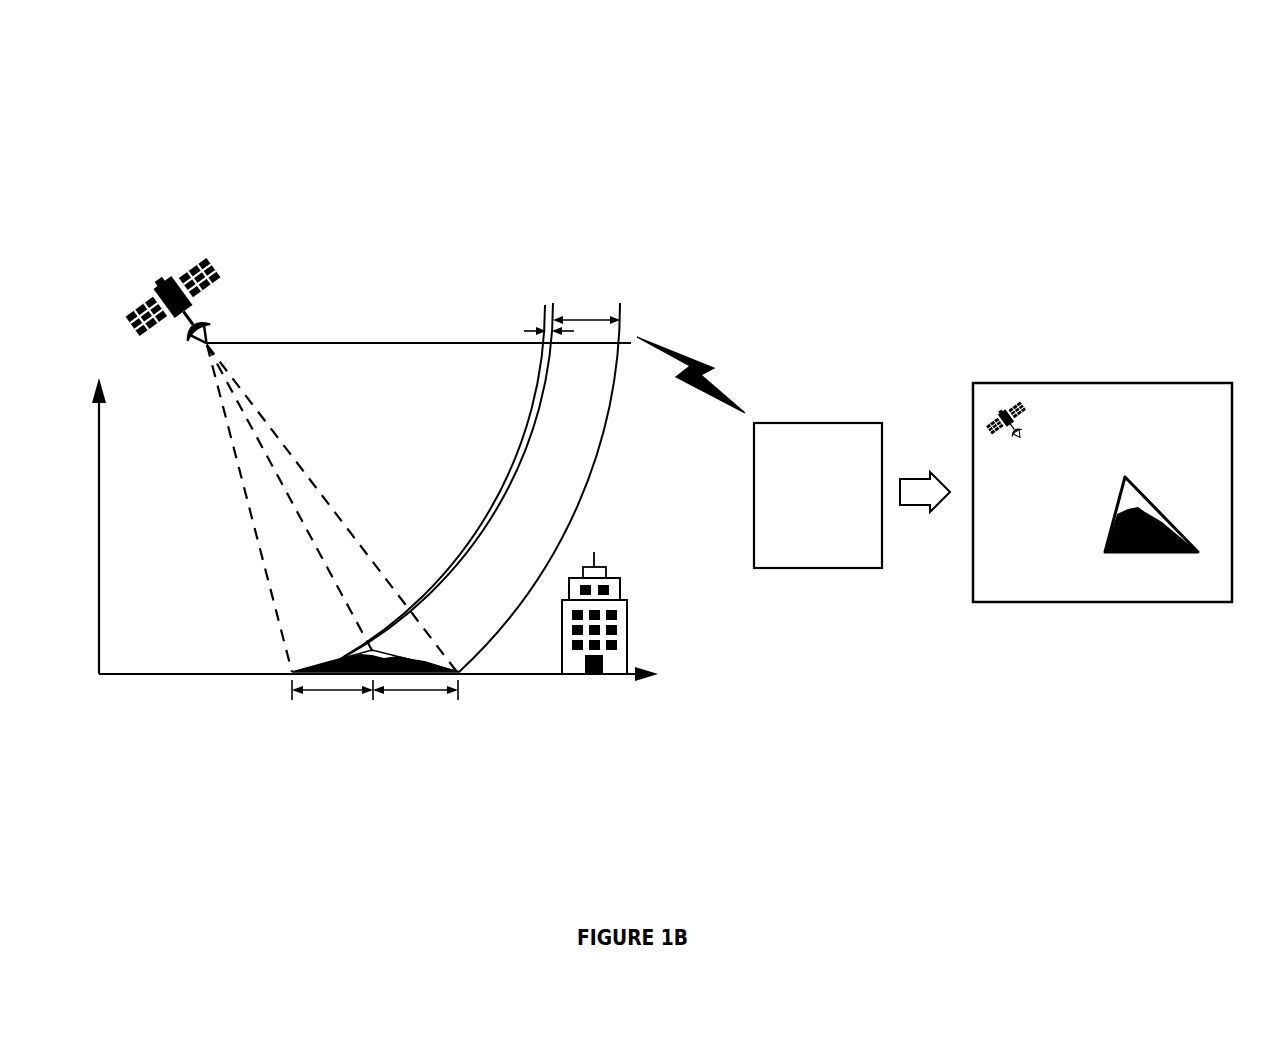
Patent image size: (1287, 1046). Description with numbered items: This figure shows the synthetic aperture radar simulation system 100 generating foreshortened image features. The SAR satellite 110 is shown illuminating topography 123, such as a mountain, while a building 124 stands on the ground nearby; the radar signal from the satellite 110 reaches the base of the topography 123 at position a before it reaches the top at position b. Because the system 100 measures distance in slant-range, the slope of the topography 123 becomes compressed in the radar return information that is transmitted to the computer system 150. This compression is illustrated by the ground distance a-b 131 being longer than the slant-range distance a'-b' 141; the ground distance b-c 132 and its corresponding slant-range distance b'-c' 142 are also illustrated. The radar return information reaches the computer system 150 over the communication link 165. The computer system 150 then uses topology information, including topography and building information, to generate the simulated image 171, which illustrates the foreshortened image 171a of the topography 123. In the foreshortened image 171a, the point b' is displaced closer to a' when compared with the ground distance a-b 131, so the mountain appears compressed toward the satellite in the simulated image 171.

The system 100 is at (108, 117).
The SAR satellite 110 is at (159, 268).
The topography 123 is at (328, 660).
The building/infrastructure 124 is at (622, 648).
The distance a-b 131 is at (328, 702).
The distance b-c 132 is at (416, 708).
The distance a'-b' 141 is at (546, 307).
The distance b'-c' 142 is at (590, 308).
The computer system 150 is at (800, 522).
The communication link 165 is at (705, 372).
The simulated image 171 is at (1080, 505).
The foreshortened image 171a is at (1155, 554).